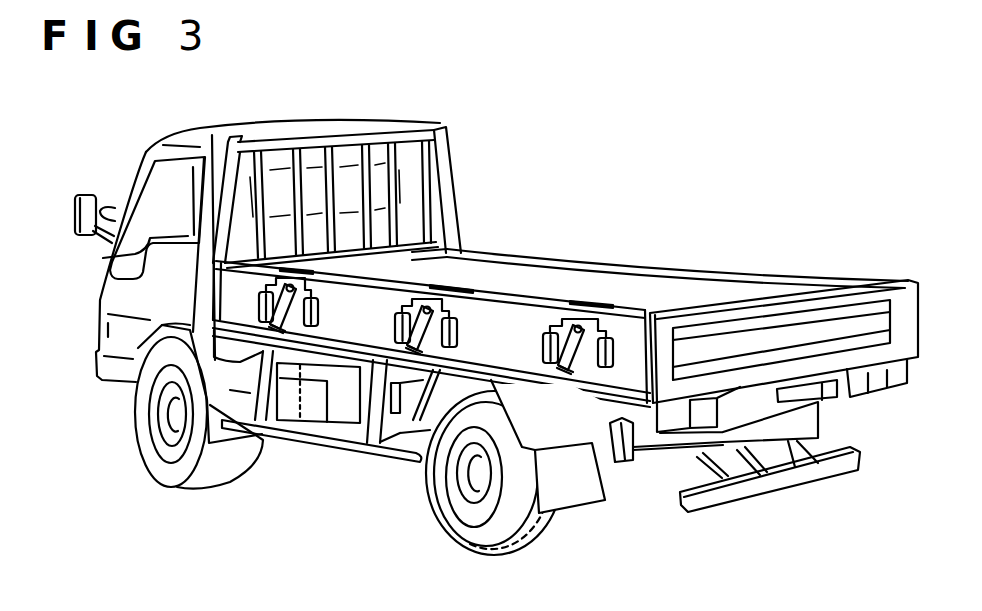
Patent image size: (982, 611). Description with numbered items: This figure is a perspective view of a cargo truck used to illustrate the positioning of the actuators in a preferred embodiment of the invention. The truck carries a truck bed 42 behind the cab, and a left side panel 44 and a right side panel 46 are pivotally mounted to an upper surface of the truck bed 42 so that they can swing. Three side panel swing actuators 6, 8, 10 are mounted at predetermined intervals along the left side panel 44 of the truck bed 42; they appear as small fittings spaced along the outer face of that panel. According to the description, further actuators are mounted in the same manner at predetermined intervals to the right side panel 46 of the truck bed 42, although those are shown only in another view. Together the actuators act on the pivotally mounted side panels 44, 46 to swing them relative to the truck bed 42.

The side panel swing actuator 6 is at (288, 326).
The side panel swing actuator 8 is at (397, 345).
The side panel swing actuator 10 is at (571, 372).
The truck bed 42 is at (630, 291).
The left side panel 44 is at (480, 291).
The right side panel 46 is at (590, 263).